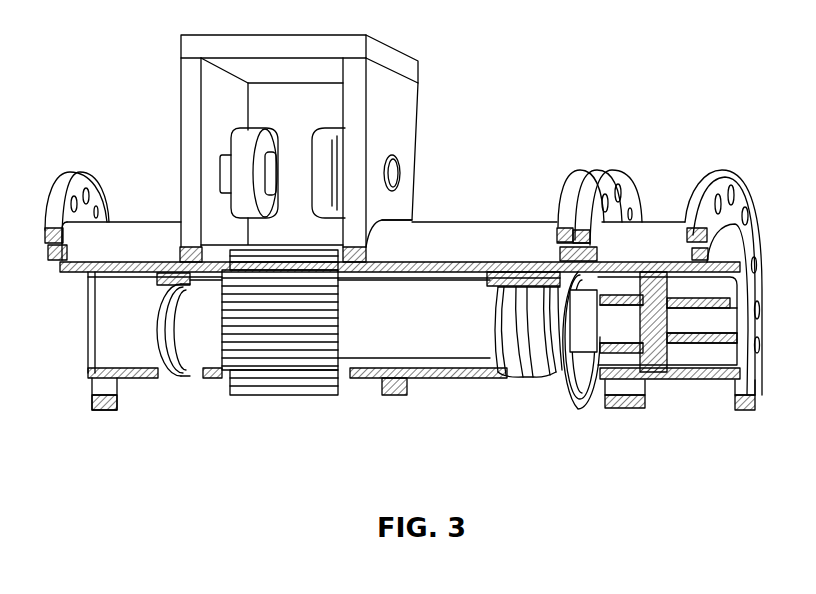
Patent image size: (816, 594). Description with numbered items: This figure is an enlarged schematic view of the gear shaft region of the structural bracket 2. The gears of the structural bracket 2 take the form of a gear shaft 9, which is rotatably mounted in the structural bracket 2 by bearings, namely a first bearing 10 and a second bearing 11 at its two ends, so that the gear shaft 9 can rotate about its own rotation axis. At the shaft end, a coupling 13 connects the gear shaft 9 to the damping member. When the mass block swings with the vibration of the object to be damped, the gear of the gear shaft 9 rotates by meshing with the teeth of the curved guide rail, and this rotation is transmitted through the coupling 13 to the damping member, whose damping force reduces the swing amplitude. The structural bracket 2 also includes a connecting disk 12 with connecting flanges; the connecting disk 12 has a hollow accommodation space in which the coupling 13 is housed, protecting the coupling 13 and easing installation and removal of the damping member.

The structural bracket 2 is at (185, 198).
The gear shaft 9 is at (262, 363).
The first bearing 10 is at (170, 350).
The second bearing 11 is at (513, 350).
The connecting disk 12 is at (662, 240).
The coupling 13 is at (682, 368).